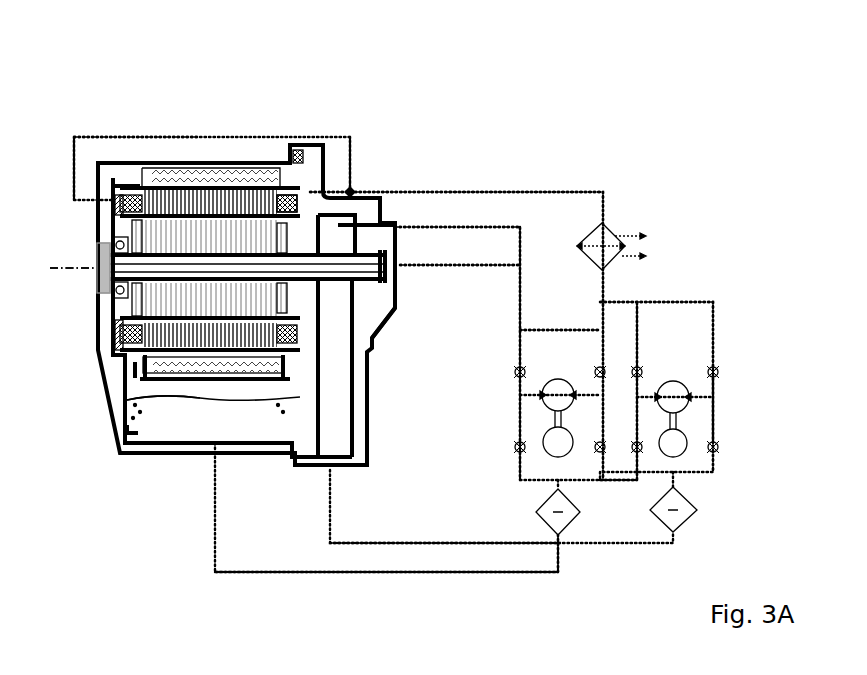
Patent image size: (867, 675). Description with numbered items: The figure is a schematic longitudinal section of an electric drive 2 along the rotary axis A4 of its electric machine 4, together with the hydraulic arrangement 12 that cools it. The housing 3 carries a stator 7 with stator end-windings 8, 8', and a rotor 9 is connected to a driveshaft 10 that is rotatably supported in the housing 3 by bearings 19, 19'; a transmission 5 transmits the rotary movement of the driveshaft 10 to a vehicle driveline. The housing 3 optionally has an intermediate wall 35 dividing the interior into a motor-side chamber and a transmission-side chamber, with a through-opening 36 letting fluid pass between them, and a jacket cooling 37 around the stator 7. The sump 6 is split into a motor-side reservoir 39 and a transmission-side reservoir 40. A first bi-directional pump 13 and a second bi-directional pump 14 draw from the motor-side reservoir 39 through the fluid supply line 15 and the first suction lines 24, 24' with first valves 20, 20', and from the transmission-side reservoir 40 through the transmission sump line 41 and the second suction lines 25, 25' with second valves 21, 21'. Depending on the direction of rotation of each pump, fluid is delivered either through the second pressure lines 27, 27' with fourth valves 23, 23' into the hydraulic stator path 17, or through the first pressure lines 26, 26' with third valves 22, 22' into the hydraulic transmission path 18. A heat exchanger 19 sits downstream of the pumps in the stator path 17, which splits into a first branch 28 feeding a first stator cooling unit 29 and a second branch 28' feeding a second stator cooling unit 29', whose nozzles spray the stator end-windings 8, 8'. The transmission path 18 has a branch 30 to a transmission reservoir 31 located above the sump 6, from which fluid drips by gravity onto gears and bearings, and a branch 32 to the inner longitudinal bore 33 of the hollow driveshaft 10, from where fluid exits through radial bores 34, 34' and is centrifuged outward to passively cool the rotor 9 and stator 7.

The electric drive 2 is at (472, 116).
The housing 3 is at (293, 200).
The electric machine 4 is at (158, 173).
The transmission 5 is at (340, 197).
The sump 6 is at (145, 428).
The stator 7 is at (187, 212).
The stator end-windings 8 is at (199, 201).
The stator end-windings 8' is at (301, 115).
The rotor 9 is at (207, 233).
The driveshaft 10 is at (132, 305).
The hydraulic arrangement 12 is at (604, 147).
The first bi-directional pump 13 is at (542, 387).
The second bi-directional pump 14 is at (673, 383).
The fluid supply line 15 is at (347, 572).
The hydraulic stator path 17 is at (525, 193).
The hydraulic transmission path 18 is at (518, 297).
The bearing / heat exchanger 19 is at (76, 227).
The bearing 19' is at (394, 342).
The first valve 20 is at (495, 457).
The first valve 20' is at (582, 562).
The second valve 21 is at (683, 487).
The second valve 21' is at (744, 470).
The third valve 22 is at (476, 359).
The third valve 22' is at (659, 352).
The fourth valve 23 is at (629, 361).
The fourth valve 23' is at (739, 374).
The first suction line 24 is at (526, 506).
The first suction line 24' is at (609, 504).
The second suction line 25 is at (626, 534).
The second suction line 25' is at (744, 413).
The first pressure line 26 is at (533, 333).
The first pressure line 26' is at (674, 364).
The second pressure line 27 is at (630, 312).
The second pressure line 27' is at (740, 360).
The first branch 28 is at (123, 98).
The second branch 28' is at (379, 158).
The first stator cooling unit 29 is at (62, 152).
The second stator cooling unit 29' is at (350, 143).
The branch 30 is at (452, 223).
The transmission reservoir 31 is at (353, 213).
The branch 32 is at (430, 265).
The longitudinal bore 33 is at (110, 277).
The radial bore 34 is at (81, 275).
The radial bore 34' is at (271, 151).
The intermediate wall 35 is at (330, 378).
The through-opening 36 is at (345, 408).
The jacket cooling 37 is at (183, 368).
The motor-side reservoir 39 is at (190, 438).
The transmission-side reservoir 40 is at (345, 445).
The transmission sump line 41 is at (360, 543).
The rotary axis A4 is at (65, 241).